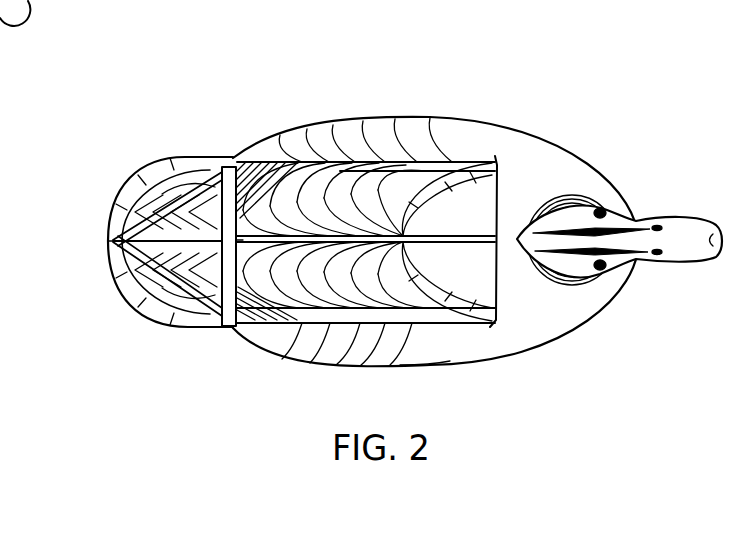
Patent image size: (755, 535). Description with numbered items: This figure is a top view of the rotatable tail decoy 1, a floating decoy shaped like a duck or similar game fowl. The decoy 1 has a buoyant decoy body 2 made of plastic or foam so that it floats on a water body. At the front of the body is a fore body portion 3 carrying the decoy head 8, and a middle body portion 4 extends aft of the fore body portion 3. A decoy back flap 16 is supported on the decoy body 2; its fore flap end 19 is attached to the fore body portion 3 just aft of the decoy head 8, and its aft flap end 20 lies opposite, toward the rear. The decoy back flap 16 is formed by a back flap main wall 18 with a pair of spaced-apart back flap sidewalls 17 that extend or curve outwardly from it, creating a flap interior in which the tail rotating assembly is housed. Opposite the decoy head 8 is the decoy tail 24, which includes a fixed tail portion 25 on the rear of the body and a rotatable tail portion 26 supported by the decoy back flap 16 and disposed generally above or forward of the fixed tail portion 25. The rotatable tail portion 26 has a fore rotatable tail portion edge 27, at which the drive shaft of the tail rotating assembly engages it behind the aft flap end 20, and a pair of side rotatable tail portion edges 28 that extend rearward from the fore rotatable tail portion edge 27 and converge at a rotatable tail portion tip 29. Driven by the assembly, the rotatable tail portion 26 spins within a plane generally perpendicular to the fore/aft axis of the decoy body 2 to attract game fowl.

The rotatable tail decoy 1 is at (209, 88).
The decoy body 2 is at (593, 143).
The fore body portion 3 is at (630, 283).
The middle body portion 4 is at (243, 240).
The decoy head 8 is at (600, 198).
The decoy back flap 16 is at (433, 148).
The back flap sidewalls 17 is at (403, 160).
The back flap main wall 18 is at (447, 222).
The fore flap end 19 is at (510, 330).
The aft flap end 20 is at (236, 162).
The decoy tail 24 is at (100, 185).
The fixed tail portion 25 is at (130, 312).
The rotatable tail portion 26 is at (155, 178).
The fore rotatable tail portion edge 27 is at (218, 330).
The side rotatable tail portion edges 28 is at (253, 102).
The rotatable tail portion tip 29 is at (110, 240).